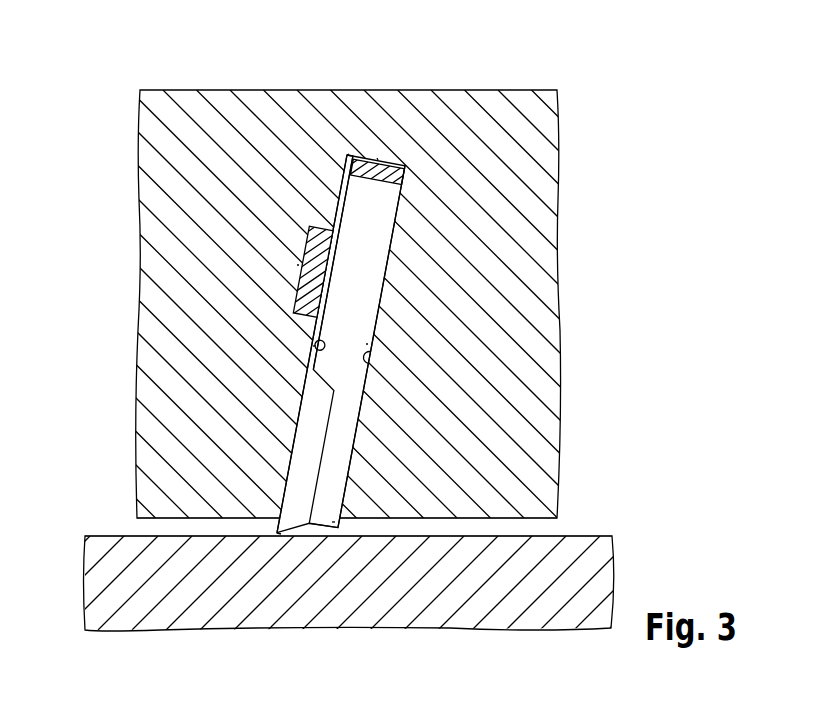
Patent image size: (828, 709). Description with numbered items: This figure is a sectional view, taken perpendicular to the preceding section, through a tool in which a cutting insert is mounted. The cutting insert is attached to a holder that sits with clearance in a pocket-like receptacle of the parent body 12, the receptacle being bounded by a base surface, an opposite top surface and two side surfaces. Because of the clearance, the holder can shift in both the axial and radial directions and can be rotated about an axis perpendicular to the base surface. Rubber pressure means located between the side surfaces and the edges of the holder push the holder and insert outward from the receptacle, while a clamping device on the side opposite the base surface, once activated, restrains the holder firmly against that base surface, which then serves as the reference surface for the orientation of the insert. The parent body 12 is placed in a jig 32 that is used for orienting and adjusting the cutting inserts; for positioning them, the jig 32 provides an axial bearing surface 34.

The parent body 12 is at (548, 118).
The jig 32 is at (113, 594).
The axial bearing surface 34 is at (120, 534).